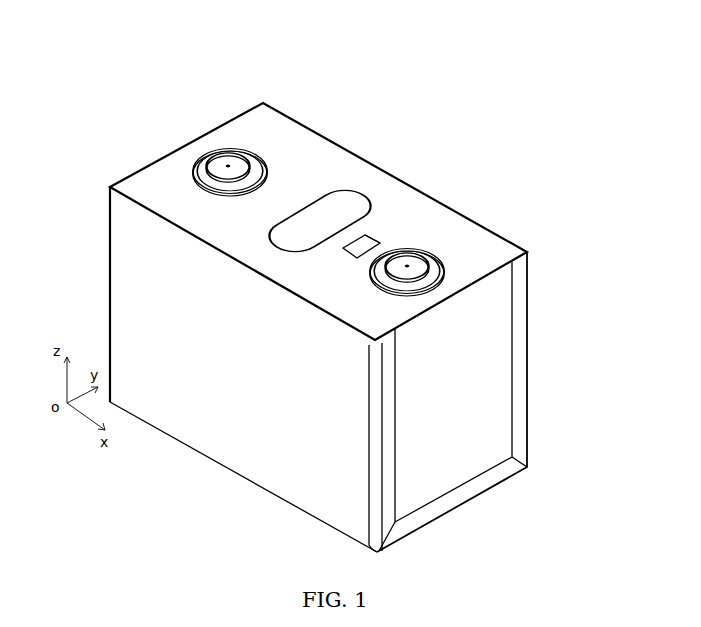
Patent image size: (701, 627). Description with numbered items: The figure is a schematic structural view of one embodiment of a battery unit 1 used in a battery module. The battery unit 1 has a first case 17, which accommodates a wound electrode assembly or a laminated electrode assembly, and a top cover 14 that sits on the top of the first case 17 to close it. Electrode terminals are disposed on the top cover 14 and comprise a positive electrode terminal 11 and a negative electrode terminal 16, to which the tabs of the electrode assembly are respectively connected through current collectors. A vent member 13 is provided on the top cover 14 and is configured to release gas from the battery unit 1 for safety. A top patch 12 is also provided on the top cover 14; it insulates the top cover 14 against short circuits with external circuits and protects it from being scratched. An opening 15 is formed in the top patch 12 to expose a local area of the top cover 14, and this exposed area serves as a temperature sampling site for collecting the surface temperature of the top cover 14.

The battery unit 1 is at (358, 300).
The positive electrode terminal 11 is at (222, 152).
The top patch 12 is at (278, 146).
The vent member 13 is at (333, 212).
The top cover 14 is at (368, 238).
The opening 15 is at (385, 243).
The negative electrode terminal 16 is at (428, 250).
The first case 17 is at (493, 371).